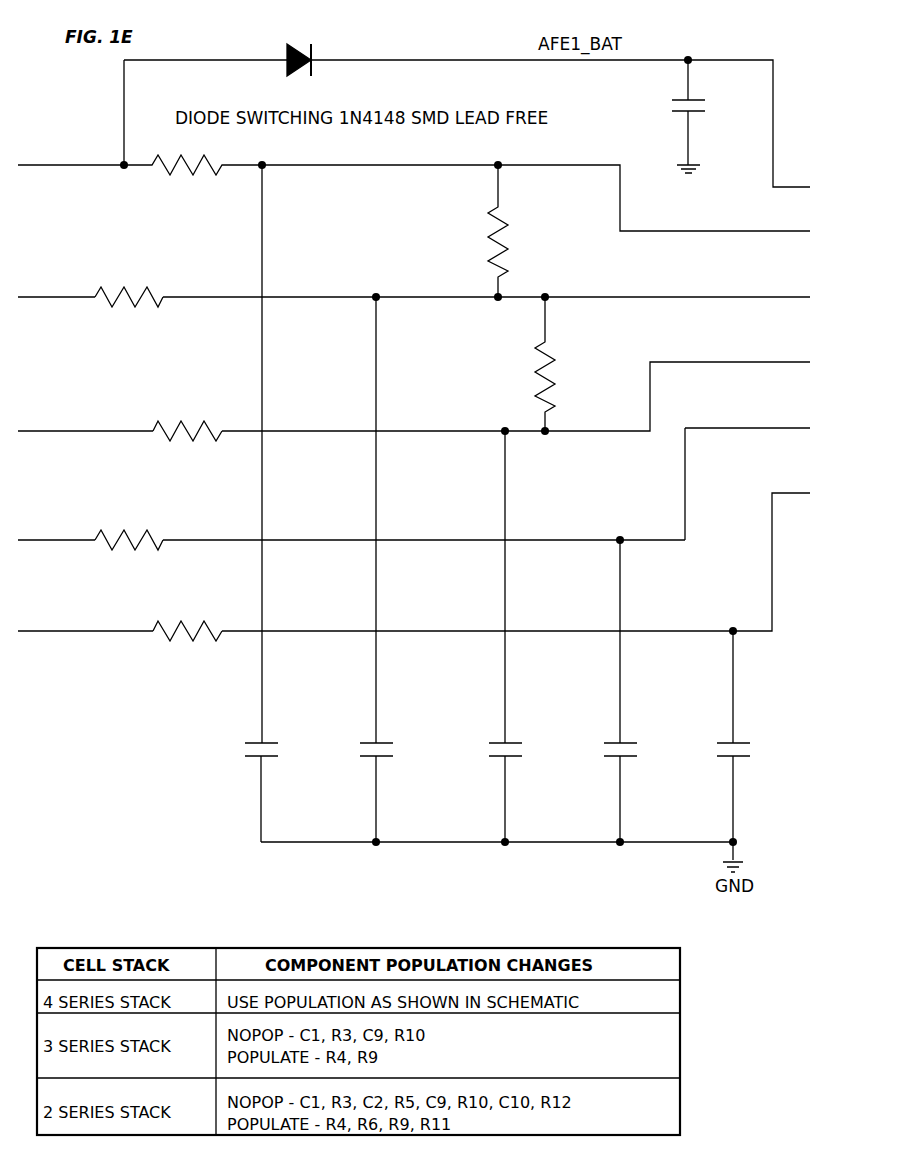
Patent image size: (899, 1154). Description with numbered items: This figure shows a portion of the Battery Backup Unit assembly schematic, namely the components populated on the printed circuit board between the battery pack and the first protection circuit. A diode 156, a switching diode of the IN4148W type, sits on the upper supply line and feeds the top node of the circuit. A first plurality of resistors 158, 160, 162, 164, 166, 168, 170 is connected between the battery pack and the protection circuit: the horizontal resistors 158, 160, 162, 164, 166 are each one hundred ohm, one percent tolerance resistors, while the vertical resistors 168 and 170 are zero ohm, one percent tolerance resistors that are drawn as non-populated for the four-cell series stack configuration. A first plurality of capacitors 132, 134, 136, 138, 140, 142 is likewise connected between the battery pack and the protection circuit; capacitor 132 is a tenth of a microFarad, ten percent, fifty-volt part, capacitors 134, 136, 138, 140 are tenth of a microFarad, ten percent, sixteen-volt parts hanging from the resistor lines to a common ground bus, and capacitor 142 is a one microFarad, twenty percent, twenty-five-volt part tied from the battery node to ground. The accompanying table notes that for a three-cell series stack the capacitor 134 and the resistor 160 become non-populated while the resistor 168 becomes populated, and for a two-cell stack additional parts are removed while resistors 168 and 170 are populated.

The capacitor 132 is at (223, 511).
The capacitor 134 is at (334, 584).
The capacitor 136 is at (464, 651).
The capacitor 138 is at (579, 706).
The capacitor 140 is at (693, 751).
The capacitor 142 is at (701, 128).
The diode 156 is at (265, 59).
The resistor 158 is at (202, 174).
The resistor 160 is at (132, 304).
The resistor 162 is at (175, 434).
The resistor 164 is at (132, 546).
The resistor 166 is at (175, 637).
The non-populated resistor 168 is at (519, 231).
The non-populated resistor 170 is at (565, 364).